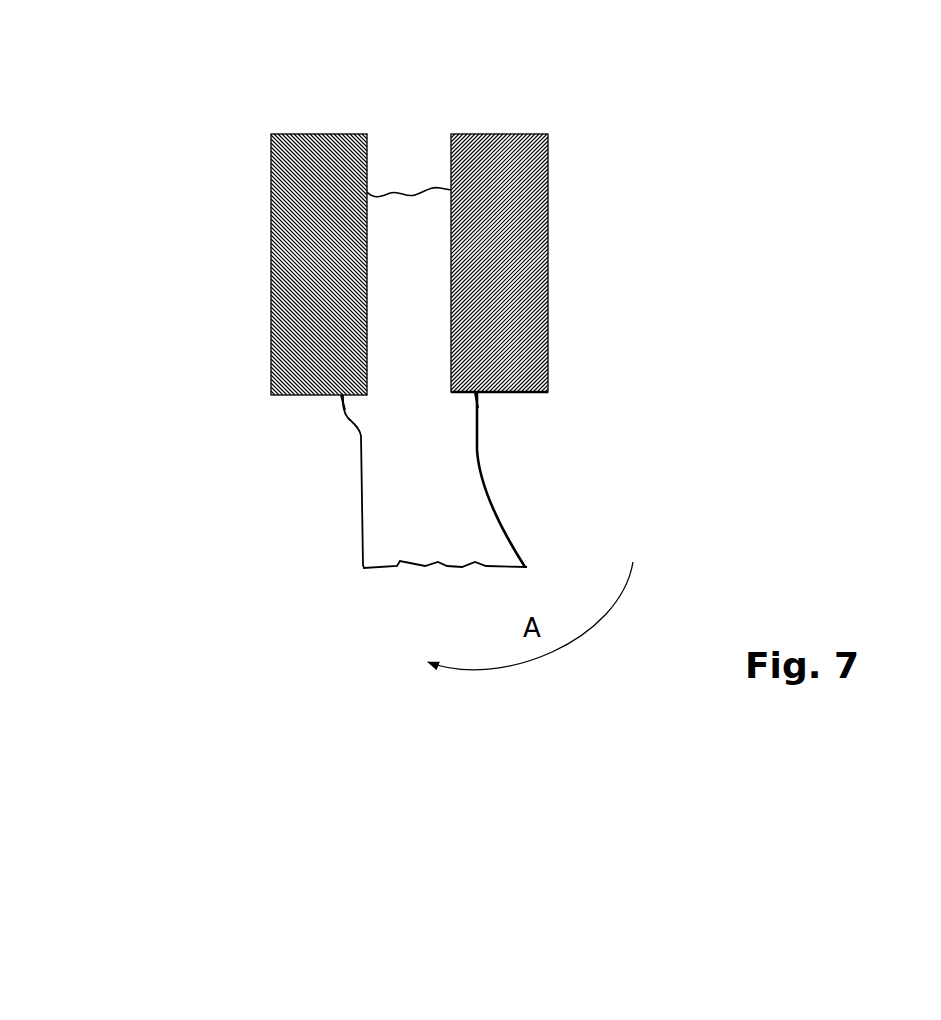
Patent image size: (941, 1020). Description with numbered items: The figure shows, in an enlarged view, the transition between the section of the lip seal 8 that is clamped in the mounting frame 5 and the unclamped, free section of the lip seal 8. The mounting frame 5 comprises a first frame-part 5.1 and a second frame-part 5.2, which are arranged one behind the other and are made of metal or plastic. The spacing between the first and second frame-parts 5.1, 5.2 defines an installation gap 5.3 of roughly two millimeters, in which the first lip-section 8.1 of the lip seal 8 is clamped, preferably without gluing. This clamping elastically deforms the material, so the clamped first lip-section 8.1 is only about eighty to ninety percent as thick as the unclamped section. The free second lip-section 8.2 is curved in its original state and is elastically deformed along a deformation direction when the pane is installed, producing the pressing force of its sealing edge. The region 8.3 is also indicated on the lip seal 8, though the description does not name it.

The mounting frame 5 is at (238, 173).
The first frame-part 5.1 is at (303, 252).
The second frame-part 5.2 is at (523, 270).
The installation gap 5.3 is at (408, 145).
The lip seal 8 is at (353, 552).
The first lip-section 8.1 is at (418, 250).
The second lip-section 8.2 is at (460, 505).
The bend portions of spring element 8.3 is at (473, 402).